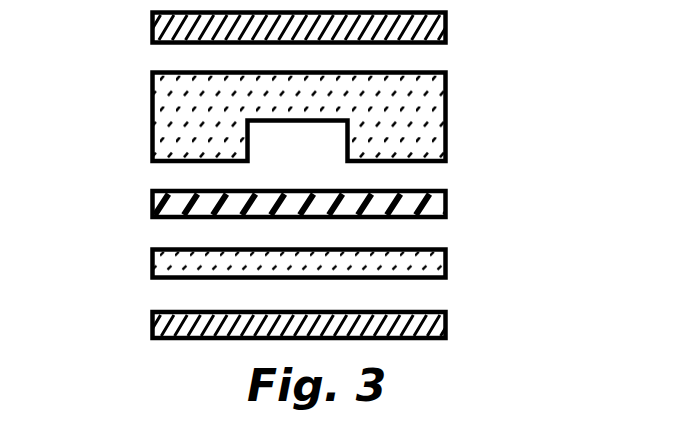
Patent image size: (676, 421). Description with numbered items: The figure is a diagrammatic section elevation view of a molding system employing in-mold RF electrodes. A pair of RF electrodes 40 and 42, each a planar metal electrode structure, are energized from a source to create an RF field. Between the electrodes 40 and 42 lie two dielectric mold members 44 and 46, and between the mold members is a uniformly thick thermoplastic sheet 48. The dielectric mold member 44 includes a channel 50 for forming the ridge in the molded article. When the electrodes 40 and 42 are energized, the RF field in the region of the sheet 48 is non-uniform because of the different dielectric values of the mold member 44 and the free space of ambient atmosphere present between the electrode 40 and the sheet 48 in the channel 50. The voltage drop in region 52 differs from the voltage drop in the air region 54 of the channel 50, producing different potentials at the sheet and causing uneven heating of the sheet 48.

The RF electrode 40 is at (442, 29).
The RF electrode 42 is at (443, 322).
The dielectric mold member 44 is at (158, 131).
The dielectric mold member 46 is at (158, 262).
The thermoplastic sheet 48 is at (158, 205).
The channel 50 is at (248, 143).
The region 52 is at (447, 97).
The air region 54 is at (337, 142).